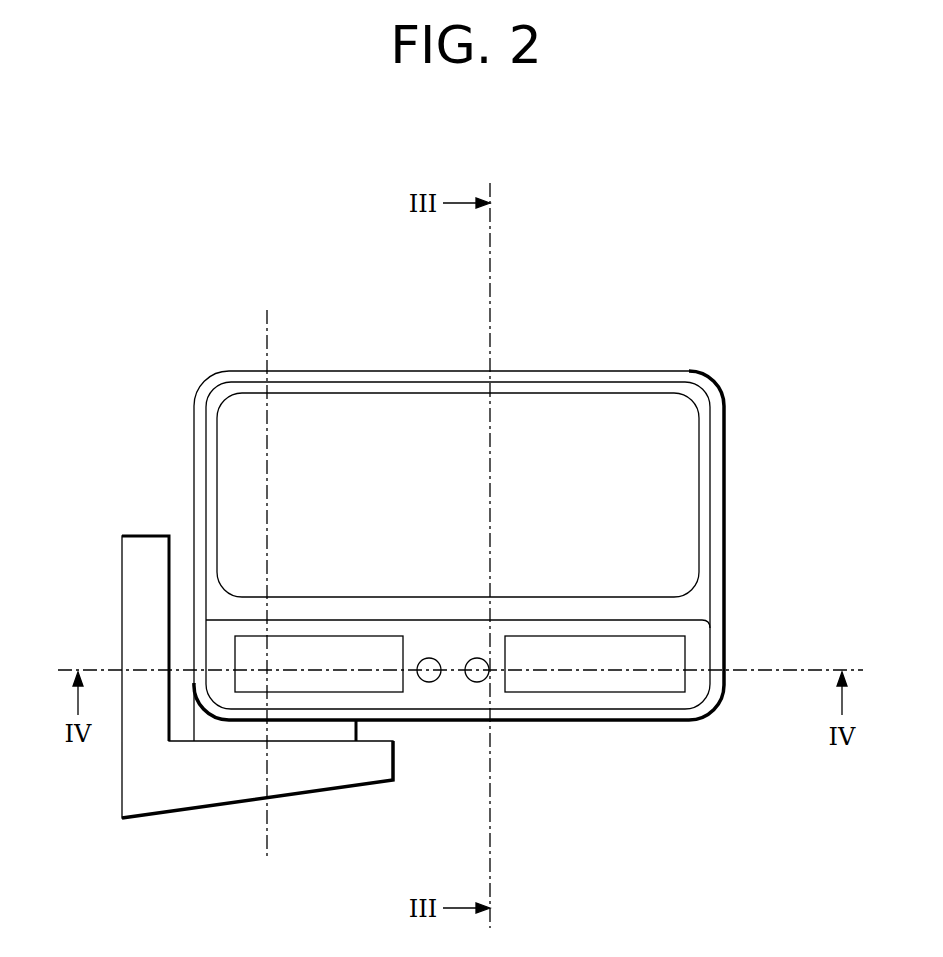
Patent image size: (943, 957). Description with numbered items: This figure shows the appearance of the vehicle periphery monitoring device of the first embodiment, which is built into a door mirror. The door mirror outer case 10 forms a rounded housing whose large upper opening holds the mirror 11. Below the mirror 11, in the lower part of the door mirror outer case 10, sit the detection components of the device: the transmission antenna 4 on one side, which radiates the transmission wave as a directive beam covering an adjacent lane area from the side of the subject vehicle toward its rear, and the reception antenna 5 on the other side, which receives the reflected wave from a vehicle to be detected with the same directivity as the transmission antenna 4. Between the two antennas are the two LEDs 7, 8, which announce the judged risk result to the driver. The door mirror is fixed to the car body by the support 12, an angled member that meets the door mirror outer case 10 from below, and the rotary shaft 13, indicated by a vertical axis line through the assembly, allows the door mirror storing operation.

The transmission antenna 4 is at (583, 693).
The reception antenna 5 is at (392, 693).
The LED 7 is at (429, 682).
The LED 8 is at (477, 682).
The door mirror outer case 10 is at (328, 371).
The mirror 11 is at (395, 415).
The support 12 is at (188, 812).
The rotary shaft 13 is at (267, 828).